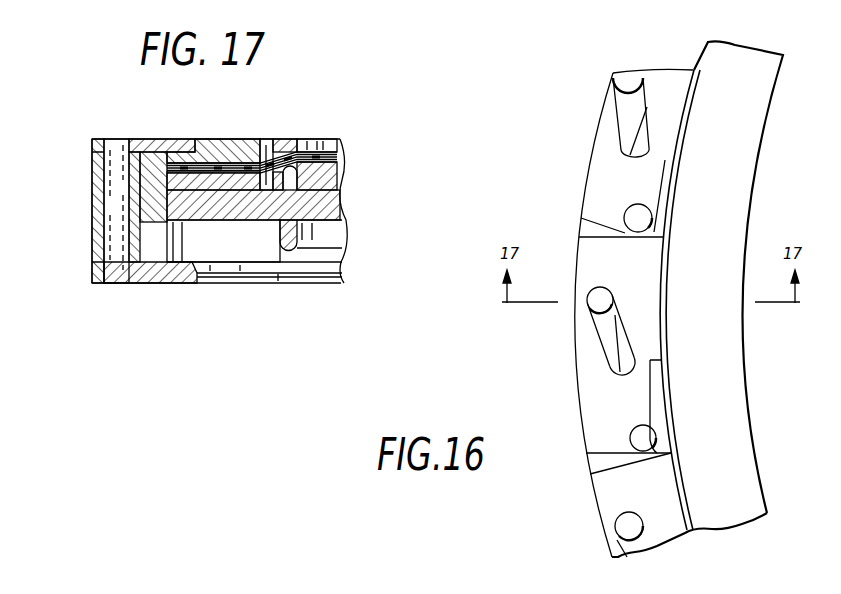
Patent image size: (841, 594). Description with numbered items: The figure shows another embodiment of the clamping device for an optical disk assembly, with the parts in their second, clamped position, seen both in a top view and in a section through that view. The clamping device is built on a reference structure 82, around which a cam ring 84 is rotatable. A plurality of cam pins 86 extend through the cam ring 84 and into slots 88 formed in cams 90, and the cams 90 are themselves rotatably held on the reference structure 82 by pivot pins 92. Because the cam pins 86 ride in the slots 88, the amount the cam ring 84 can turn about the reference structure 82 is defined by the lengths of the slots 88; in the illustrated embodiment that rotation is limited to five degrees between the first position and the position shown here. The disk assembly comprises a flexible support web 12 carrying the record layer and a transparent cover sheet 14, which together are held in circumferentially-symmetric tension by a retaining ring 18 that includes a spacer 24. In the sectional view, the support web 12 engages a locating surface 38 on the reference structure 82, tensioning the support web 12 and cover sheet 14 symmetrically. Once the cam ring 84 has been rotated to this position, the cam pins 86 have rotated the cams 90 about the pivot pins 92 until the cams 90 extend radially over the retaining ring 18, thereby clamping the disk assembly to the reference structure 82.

In FIG. 17, the support web 12 is at (333, 172).
In FIG. 17, the cover sheet 14 is at (313, 141).
In FIG. 17, the retaining ring 18 is at (238, 140).
In FIG. 17, the spacer 24 is at (277, 163).
In FIG. 17, the locating surface 38 is at (297, 172).
In FIG. 17, the reference structure 82 is at (221, 214).
In FIG. 17, the cam ring 84 is at (92, 203).
In FIG. 16, the cam ring 84 is at (618, 129).
In FIG. 17, the cam pins 86 is at (110, 146).
In FIG. 16, the cam pins 86 is at (615, 78).
In FIG. 16, the slots 88 is at (606, 340).
In FIG. 17, the cams 90 is at (155, 138).
In FIG. 16, the cams 90 is at (597, 173).
In FIG. 16, the pivot pins 92 is at (630, 213).